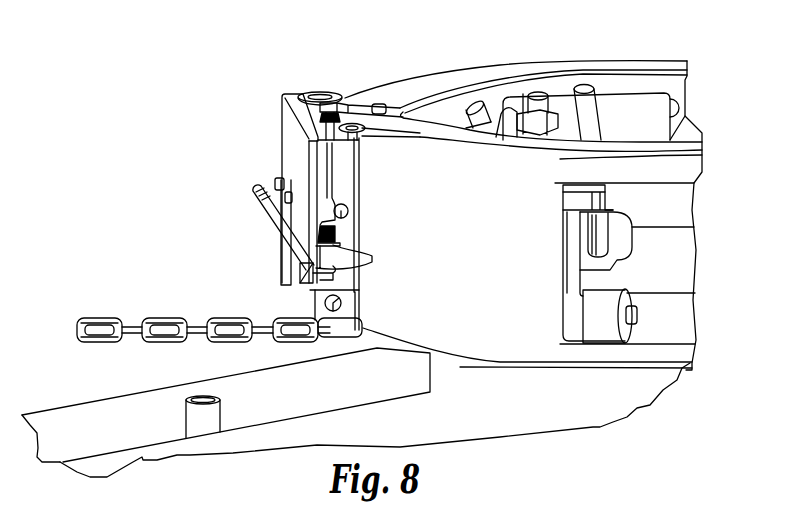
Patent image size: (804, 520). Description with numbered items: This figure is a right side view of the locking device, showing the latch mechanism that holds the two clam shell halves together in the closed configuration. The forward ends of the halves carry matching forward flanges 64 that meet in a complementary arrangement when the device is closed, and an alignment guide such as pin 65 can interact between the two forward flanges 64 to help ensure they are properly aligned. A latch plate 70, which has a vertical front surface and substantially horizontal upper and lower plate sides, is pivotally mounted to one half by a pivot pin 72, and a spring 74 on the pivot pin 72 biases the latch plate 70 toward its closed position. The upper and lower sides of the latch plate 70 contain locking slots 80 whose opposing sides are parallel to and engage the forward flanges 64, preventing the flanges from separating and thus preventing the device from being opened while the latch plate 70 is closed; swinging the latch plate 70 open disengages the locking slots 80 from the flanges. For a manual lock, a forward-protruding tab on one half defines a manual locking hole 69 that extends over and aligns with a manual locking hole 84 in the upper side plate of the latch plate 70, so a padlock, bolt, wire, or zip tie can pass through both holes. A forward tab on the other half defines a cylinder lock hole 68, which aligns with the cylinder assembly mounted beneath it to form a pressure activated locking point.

The forward flange 64 is at (343, 185).
The pin 65 is at (349, 214).
The cylinder lock hole 68 is at (320, 97).
The manual locking hole 69 is at (386, 122).
The latch plate 70 is at (290, 157).
The pivot pin 72 is at (338, 101).
The spring 74 is at (337, 237).
The locking slot 80 is at (318, 114).
The manual locking hole 84 is at (350, 144).